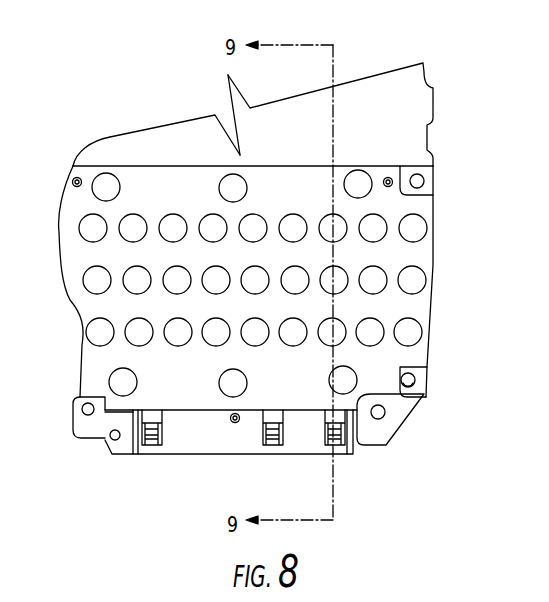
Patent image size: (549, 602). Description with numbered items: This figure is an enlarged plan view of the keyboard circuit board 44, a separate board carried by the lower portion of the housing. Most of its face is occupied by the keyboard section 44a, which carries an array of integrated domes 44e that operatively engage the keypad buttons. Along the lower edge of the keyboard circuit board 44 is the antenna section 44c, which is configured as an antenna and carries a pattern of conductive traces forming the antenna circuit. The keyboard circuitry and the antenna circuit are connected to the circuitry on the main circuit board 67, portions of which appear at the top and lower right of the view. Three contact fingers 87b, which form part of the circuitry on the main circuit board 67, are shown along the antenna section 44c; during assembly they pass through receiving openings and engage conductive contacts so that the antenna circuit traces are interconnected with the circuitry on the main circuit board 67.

The keyboard circuit board 44 is at (268, 303).
The keyboard section 44a is at (408, 302).
The antenna section 44c is at (197, 456).
The integrated domes 44e is at (413, 272).
The main circuit board 67 is at (416, 89).
The contact fingers 87b is at (273, 420).